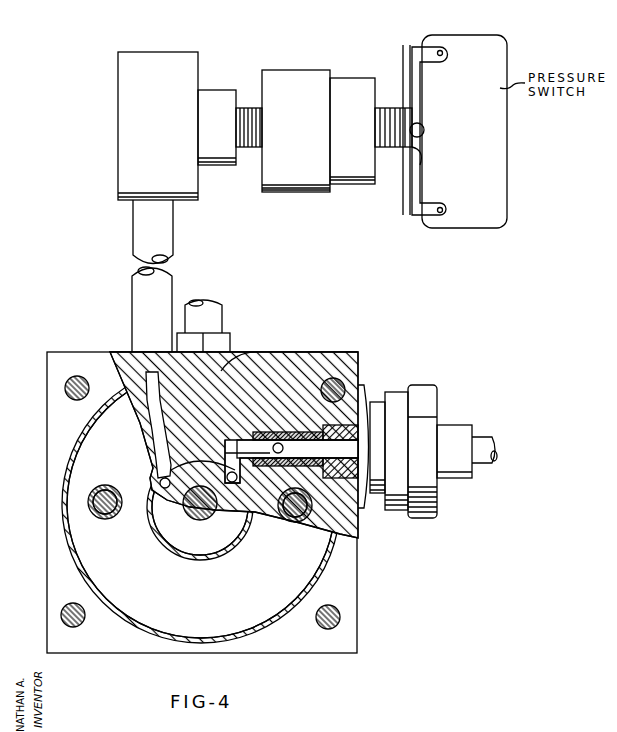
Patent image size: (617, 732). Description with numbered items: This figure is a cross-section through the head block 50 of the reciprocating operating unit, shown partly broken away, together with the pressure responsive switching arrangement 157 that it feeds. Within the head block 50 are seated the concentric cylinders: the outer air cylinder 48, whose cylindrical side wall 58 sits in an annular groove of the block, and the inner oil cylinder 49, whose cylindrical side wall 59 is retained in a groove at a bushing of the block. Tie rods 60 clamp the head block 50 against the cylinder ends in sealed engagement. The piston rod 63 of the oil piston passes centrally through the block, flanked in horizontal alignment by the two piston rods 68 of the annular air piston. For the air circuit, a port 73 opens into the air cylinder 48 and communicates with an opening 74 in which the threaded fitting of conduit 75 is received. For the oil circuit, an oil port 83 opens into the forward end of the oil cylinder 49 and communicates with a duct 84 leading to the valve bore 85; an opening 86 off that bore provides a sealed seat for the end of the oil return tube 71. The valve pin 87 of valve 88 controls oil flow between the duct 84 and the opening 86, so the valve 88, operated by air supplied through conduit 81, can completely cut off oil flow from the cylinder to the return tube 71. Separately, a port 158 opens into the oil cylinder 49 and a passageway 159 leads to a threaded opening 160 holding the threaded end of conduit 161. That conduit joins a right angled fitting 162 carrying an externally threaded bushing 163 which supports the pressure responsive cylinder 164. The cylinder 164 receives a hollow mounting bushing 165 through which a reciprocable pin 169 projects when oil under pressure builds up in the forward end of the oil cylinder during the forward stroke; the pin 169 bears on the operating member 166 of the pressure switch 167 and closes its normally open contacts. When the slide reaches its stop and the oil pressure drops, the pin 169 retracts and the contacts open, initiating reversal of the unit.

The air cylinder 48 is at (226, 622).
The oil cylinder 49 is at (213, 540).
The head block 50 is at (114, 638).
The cylindrical side wall of outer air cylinder 58 is at (150, 622).
The cylindrical side wall of inner oil cylinder 59 is at (174, 554).
The tie rods 60 is at (65, 386).
The piston rod 63 is at (195, 512).
The piston rods 68 is at (102, 509).
The oil return tube 71 is at (234, 445).
The port 73 is at (240, 366).
The opening 74 is at (232, 348).
The conduit 75 is at (222, 315).
The conduit 81 is at (486, 462).
The oil port 83 is at (231, 505).
The duct 84 is at (228, 440).
The valve bore 85 is at (240, 441).
The opening 86 is at (272, 449).
The valve pin 87 is at (350, 452).
The valve 88 is at (425, 401).
The pressure responsive switching arrangement 157 is at (284, 192).
The port 158 is at (158, 482).
The passageway 159 is at (150, 437).
The threaded opening 160 is at (133, 352).
The conduit 161 is at (133, 242).
The right angled fitting 162 is at (164, 130).
The externally threaded bushing 163 is at (249, 112).
The pressure responsive cylinder 164 is at (304, 133).
The hollow mounting bushing 165 is at (392, 108).
The operating member 166 is at (423, 128).
The pressure switch 167 is at (470, 158).
The reciprocable pin 169 is at (412, 148).